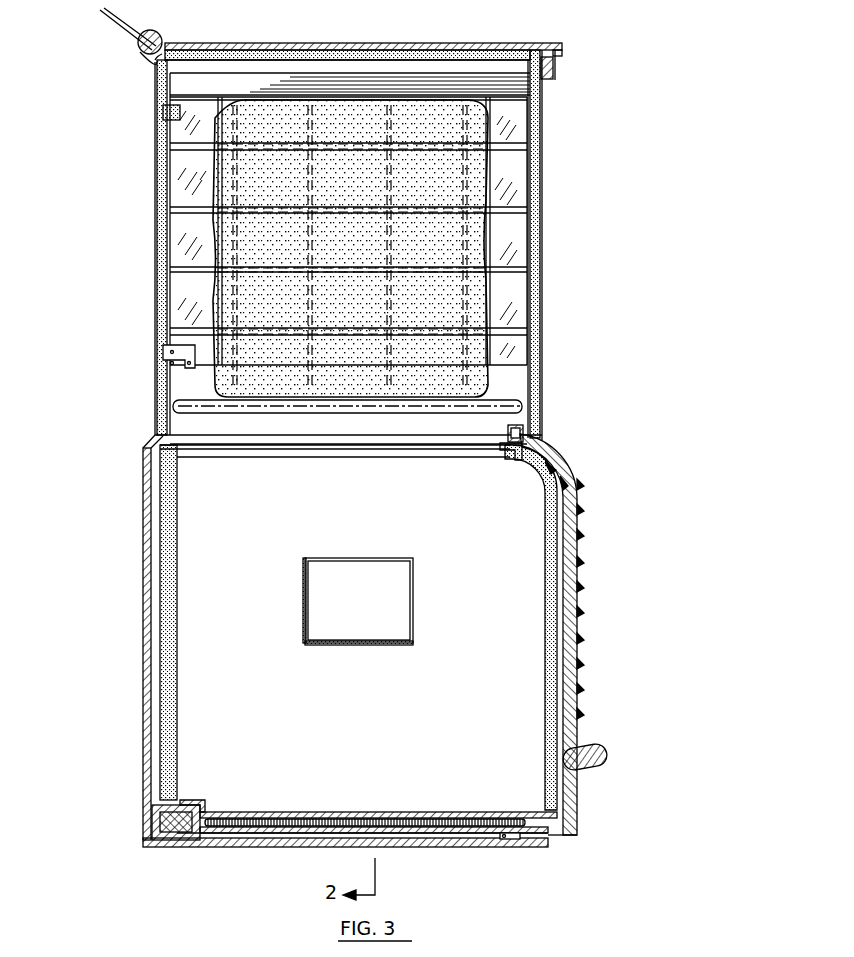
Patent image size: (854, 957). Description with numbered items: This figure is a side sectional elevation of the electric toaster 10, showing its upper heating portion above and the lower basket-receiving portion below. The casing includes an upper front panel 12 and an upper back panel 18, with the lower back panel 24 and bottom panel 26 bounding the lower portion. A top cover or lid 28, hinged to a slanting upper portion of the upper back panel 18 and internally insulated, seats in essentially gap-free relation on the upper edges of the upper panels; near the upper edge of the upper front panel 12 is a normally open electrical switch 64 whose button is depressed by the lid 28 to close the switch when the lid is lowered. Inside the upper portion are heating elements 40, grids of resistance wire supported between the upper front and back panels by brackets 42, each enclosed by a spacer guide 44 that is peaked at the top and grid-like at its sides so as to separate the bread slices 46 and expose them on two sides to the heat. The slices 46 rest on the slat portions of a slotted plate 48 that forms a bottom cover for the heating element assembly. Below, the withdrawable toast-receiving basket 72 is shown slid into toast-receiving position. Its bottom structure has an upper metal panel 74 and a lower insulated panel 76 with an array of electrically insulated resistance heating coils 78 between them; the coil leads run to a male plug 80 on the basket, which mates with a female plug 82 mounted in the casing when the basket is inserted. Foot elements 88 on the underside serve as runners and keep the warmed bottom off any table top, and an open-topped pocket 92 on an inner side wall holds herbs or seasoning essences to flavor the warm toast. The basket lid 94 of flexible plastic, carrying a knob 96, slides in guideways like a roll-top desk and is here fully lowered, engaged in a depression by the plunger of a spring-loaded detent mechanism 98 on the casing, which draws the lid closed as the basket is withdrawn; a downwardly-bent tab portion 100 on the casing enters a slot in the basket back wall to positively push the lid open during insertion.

The electric toaster 10 is at (580, 260).
The upper front panel 12 is at (540, 235).
The upper back panel 18 is at (165, 220).
The lower back panel 24 is at (145, 612).
The bottom panel 26 is at (430, 845).
The top cover or lid 28 is at (484, 45).
The heating elements 40 is at (175, 297).
The brackets 42 is at (163, 113).
The spacer guides 44 is at (258, 98).
The bread slices 46 is at (495, 377).
The slotted plate 48 is at (176, 408).
The electrical switch 64 is at (556, 72).
The toast-receiving basket 72 is at (590, 556).
The upper metal panel 74 is at (389, 804).
The lower panel 76 is at (340, 834).
The resistance heating coils 78 is at (268, 835).
The male plug 80 is at (195, 800).
The female plug 82 is at (170, 842).
The foot elements 88 is at (512, 840).
The pocket or receptacle 92 is at (392, 557).
The basket lid 94 is at (575, 610).
The knob or finger grip element 96 is at (597, 747).
The spring-loaded detent mechanism 98 is at (508, 430).
The downwardly-bent tab portion 100 is at (505, 449).